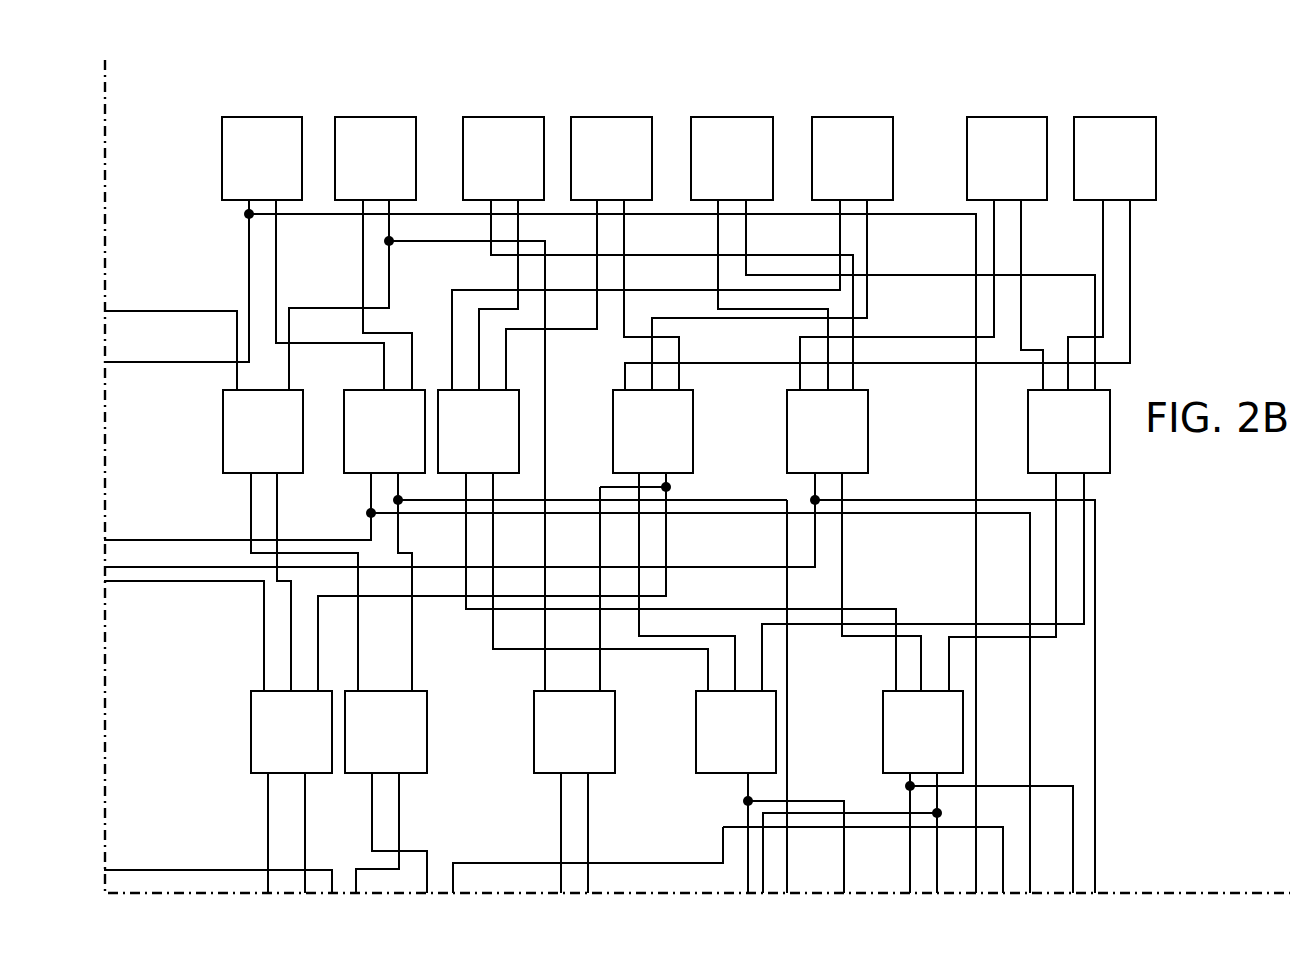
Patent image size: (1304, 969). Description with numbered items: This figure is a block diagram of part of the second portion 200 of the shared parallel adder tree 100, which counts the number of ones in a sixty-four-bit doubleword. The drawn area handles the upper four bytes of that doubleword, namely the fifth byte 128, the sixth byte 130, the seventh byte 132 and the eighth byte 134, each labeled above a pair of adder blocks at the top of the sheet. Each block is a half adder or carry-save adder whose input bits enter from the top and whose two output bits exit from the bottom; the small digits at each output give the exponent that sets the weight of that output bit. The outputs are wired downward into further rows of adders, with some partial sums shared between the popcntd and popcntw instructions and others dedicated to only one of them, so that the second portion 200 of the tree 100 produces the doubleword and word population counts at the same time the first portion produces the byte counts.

The Byte 4 128 is at (297, 77).
The Byte 5 130 is at (537, 77).
The Byte 6 132 is at (777, 77).
The Byte 7 134 is at (1000, 77).
The second portion 200 is at (1232, 185).
The shared parallel adder tree 100 is at (1298, 268).